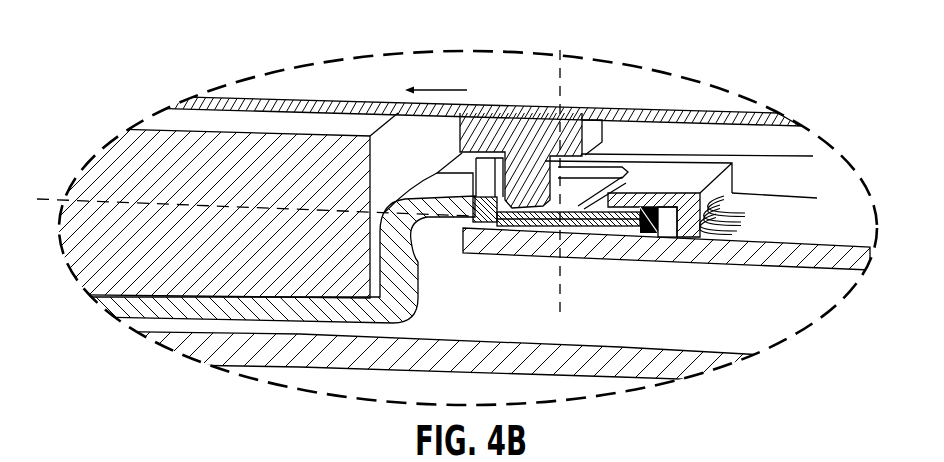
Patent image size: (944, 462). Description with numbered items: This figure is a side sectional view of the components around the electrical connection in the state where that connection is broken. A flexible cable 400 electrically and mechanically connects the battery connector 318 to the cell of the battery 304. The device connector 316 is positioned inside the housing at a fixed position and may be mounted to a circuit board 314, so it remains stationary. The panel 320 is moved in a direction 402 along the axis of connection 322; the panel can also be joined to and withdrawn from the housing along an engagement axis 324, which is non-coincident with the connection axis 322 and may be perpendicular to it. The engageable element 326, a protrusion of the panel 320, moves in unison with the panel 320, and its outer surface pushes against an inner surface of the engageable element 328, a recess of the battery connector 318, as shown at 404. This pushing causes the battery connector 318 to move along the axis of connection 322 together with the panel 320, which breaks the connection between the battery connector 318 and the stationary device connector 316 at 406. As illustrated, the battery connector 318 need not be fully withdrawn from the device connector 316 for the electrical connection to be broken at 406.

The battery 304 is at (192, 125).
The circuit board 314 is at (807, 210).
The device connector 316 is at (700, 182).
The battery connector 318 is at (588, 197).
The panel 320 is at (318, 82).
The connection axis 322 is at (246, 195).
The engagement axis 324 is at (545, 170).
The engageable element 326 is at (523, 187).
The engageable element 328 is at (548, 191).
The flexible cable 400 is at (437, 185).
The direction 402 is at (436, 79).
The pushing contact 404 is at (490, 183).
The broken electrical connection 406 is at (664, 218).